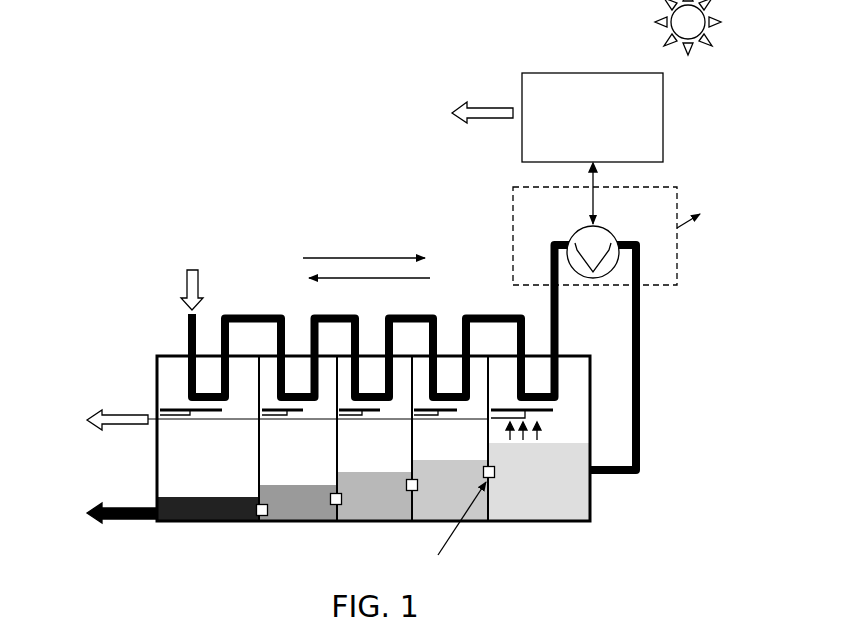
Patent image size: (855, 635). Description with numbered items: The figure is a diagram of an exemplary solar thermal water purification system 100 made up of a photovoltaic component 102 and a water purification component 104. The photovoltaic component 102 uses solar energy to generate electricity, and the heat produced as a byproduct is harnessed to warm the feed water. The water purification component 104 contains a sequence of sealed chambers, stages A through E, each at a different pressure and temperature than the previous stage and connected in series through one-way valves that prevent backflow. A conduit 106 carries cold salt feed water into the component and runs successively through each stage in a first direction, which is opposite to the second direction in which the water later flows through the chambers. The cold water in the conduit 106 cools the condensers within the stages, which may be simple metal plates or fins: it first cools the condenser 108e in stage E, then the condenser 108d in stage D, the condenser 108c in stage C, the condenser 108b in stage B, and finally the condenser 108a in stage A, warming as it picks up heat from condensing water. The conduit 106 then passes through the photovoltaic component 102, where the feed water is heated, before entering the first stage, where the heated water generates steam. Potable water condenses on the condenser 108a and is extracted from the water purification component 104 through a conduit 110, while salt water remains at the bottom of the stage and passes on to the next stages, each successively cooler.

The water purification system 100 is at (108, 137).
The photovoltaic component 102 is at (592, 117).
The water purification component 104 is at (650, 557).
The conduit 106 is at (251, 314).
The condenser 108a is at (556, 408).
The condenser 108b is at (452, 416).
The condenser 108c is at (379, 416).
The condenser 108d is at (299, 416).
The condenser 108e is at (219, 416).
The conduit 110 is at (182, 422).